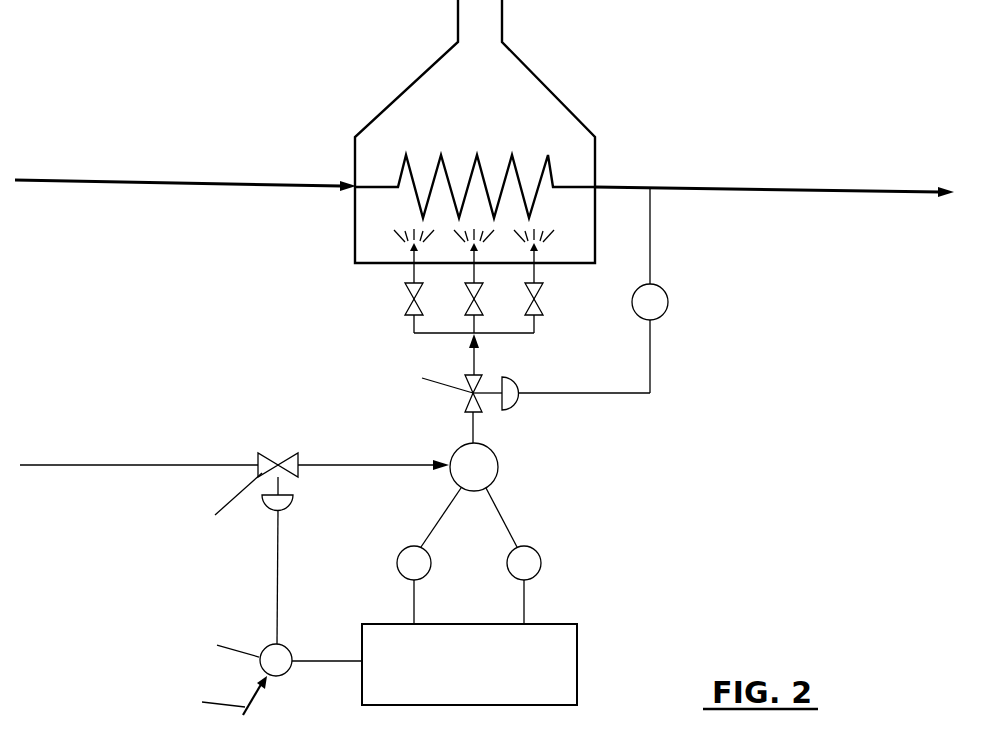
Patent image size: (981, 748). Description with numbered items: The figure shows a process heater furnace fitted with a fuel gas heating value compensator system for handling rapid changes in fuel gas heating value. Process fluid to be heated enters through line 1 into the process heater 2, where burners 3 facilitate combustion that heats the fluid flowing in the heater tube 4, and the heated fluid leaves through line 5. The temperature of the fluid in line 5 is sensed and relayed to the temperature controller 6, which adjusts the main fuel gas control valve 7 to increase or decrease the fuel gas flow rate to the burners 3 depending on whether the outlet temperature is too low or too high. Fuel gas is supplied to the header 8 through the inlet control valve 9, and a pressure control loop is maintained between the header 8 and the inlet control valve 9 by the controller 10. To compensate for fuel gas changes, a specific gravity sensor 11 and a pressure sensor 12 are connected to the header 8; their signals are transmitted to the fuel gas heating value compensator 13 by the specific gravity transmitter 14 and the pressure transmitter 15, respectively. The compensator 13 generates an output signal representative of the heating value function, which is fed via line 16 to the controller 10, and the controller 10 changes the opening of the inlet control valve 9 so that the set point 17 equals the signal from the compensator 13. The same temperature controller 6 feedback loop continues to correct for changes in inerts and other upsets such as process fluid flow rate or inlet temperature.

The line 1 is at (155, 183).
The process heater 2 is at (537, 78).
The burners 3 is at (468, 248).
The heater tube 4 is at (470, 170).
The line 5 is at (788, 193).
The temperature controller 6 is at (636, 316).
The main fuel gas control valve 7 is at (473, 393).
The header 8 is at (495, 450).
The inlet control valve 9 is at (278, 465).
The controller 10 is at (267, 645).
The specific gravity sensor 11 is at (500, 520).
The pressure sensor 12 is at (438, 518).
The fuel gas heating value compensator 13 is at (578, 663).
The specific gravity transmitter 14 is at (540, 562).
The pressure transmitter 15 is at (398, 557).
The line 16 is at (323, 661).
The set point 17 is at (255, 703).